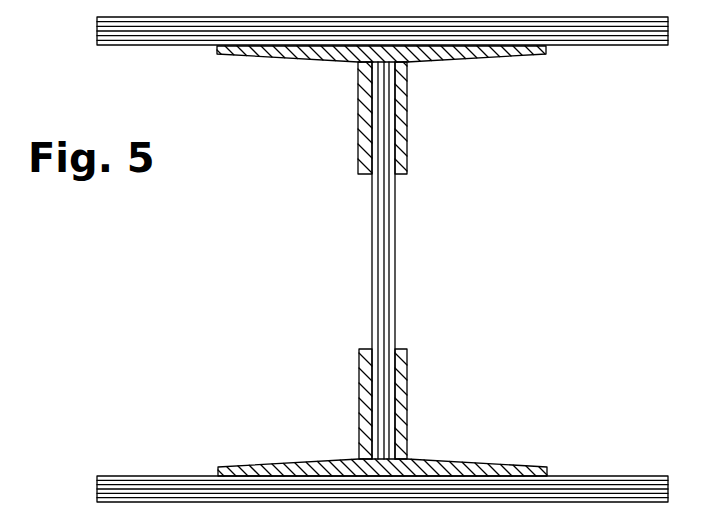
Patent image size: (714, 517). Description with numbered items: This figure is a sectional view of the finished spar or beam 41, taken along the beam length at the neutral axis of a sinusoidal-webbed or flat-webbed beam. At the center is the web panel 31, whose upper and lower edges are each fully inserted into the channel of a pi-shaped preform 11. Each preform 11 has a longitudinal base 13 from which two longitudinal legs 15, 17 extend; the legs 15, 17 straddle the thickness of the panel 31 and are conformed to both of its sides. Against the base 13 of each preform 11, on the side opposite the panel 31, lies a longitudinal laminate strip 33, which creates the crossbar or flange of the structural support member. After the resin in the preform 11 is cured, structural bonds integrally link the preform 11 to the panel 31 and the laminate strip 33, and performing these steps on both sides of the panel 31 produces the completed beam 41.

The preform 11 is at (386, 261).
The base 13 is at (475, 464).
The leg 15 is at (362, 348).
The leg 17 is at (405, 348).
The panel 31 is at (394, 195).
The laminate strip 33 is at (147, 46).
The beam 41 is at (276, 248).